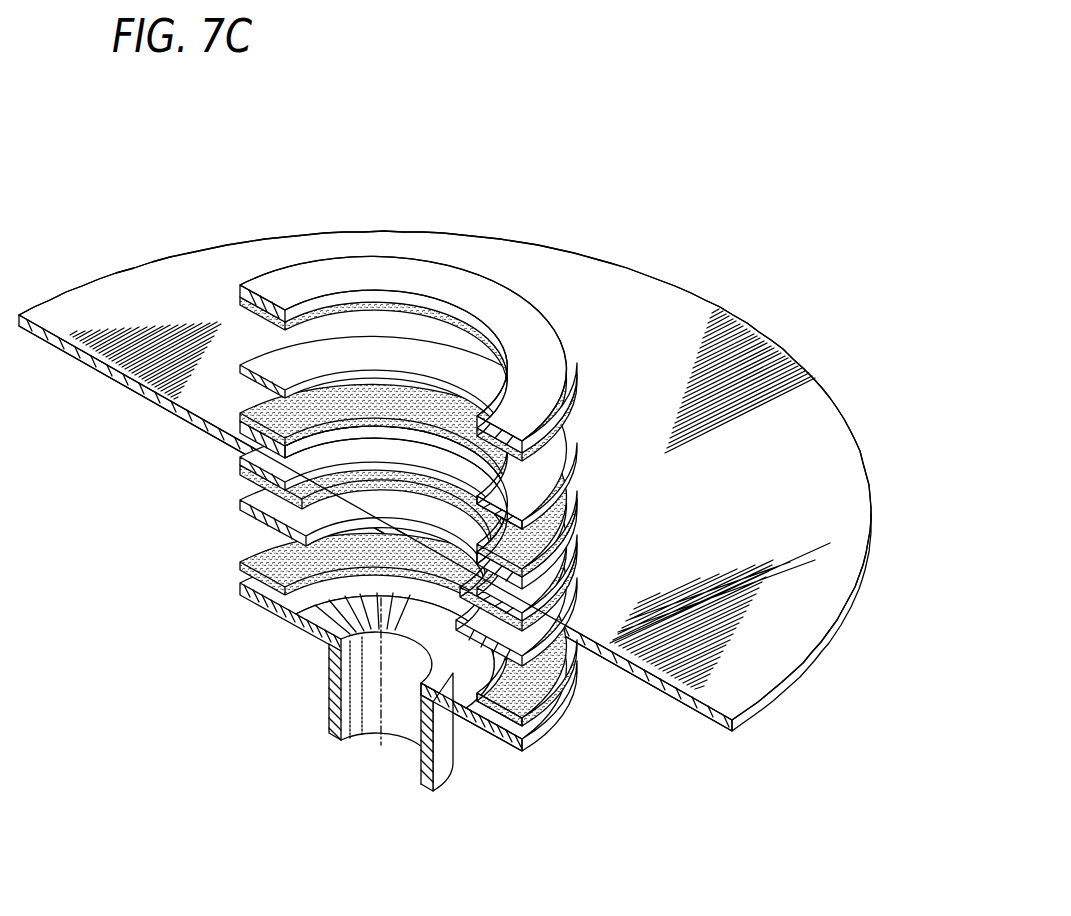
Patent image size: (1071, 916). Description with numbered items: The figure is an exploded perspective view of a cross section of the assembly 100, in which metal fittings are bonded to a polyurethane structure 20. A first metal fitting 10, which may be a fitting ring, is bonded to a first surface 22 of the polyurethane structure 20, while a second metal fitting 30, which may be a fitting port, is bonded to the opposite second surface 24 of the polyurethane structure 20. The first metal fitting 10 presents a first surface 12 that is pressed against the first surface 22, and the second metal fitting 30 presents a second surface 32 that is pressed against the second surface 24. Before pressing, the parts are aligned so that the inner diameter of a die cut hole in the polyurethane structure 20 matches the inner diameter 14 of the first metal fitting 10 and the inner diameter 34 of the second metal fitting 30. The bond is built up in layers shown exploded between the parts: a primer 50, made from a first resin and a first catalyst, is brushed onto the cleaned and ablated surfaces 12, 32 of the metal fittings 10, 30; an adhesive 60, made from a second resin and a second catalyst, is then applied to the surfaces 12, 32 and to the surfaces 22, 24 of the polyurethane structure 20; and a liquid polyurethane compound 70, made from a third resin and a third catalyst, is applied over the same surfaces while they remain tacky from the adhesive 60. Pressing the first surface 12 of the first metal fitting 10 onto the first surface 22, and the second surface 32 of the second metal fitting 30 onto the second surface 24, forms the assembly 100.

The assembly 100 is at (700, 118).
The first metal fitting 10 is at (288, 287).
The first surface of the first metal fitting 12 is at (512, 478).
The inner diameter of the first metal fitting 14 is at (452, 305).
The polyurethane structure 20 is at (213, 430).
The first surface of the polyurethane structure 22 is at (831, 447).
The second surface of the polyurethane structure 24 is at (713, 713).
The second metal fitting 30 is at (320, 634).
The second surface of the second metal fitting 32 is at (510, 727).
The inner diameter of the second metal fitting 34 is at (476, 713).
The primer 50 is at (536, 450).
The adhesive 60 is at (240, 297).
The liquid polyurethane compound 70 is at (267, 366).